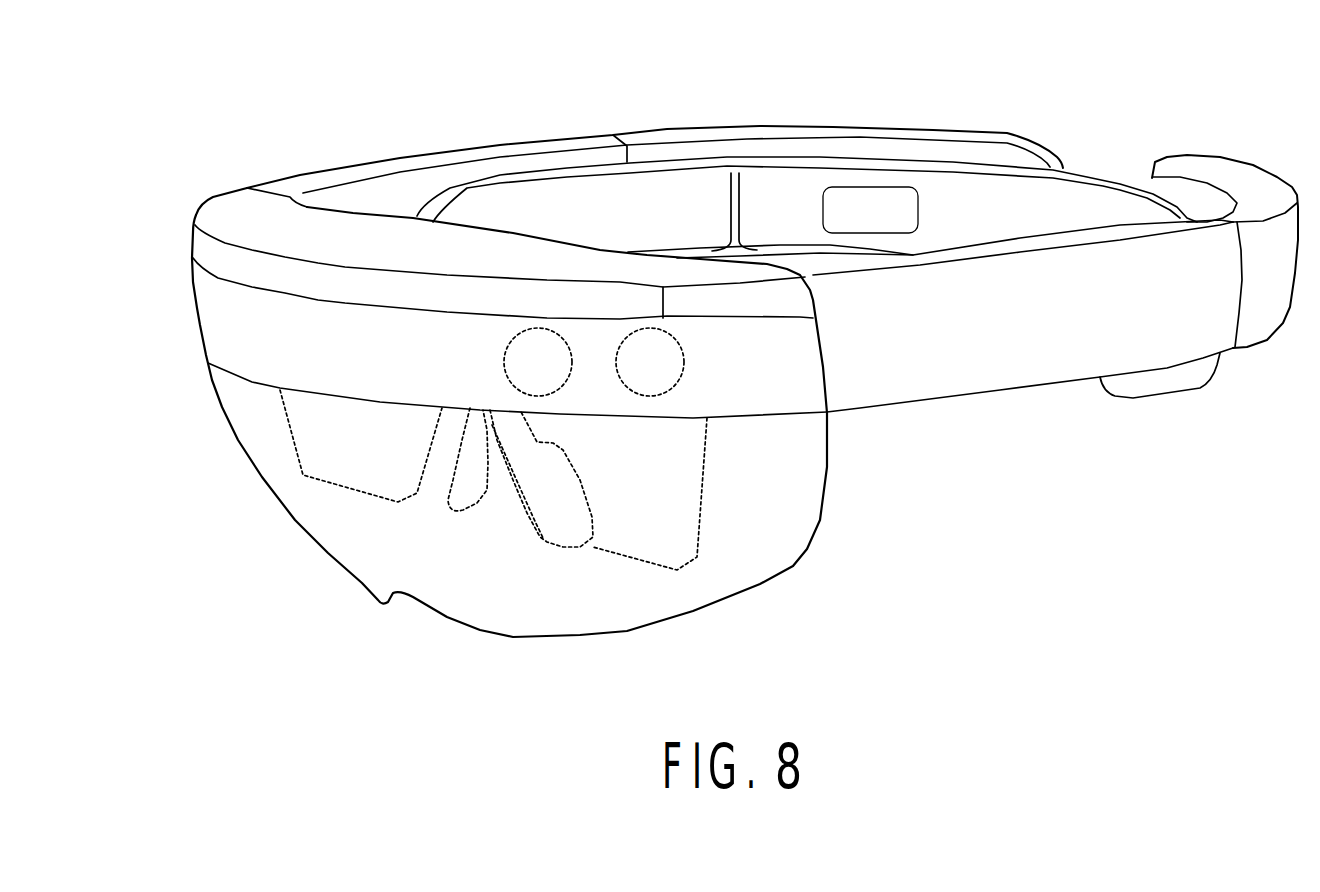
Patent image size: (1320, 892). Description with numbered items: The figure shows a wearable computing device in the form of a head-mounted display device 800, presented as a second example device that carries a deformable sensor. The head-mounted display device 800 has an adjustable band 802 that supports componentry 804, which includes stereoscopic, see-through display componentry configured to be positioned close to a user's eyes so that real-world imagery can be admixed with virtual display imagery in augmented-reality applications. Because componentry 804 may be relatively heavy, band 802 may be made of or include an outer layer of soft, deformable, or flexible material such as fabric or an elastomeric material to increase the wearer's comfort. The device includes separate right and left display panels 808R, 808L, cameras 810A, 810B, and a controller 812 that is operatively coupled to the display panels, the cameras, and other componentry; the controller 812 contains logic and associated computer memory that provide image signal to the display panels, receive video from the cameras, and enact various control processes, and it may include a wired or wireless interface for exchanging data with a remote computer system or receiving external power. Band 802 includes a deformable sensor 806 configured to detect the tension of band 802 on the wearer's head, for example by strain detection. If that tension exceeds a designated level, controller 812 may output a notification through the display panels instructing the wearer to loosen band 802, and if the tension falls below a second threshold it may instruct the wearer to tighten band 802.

The head-mounted display device 800 is at (1228, 79).
The adjustable band 802 is at (1086, 179).
The componentry 804 is at (168, 238).
The deformable sensor 806 is at (890, 223).
The left display panel 808L is at (416, 492).
The right display panel 808R is at (661, 547).
The camera 810A is at (561, 375).
The camera 810B is at (673, 375).
The controller 812 is at (373, 252).